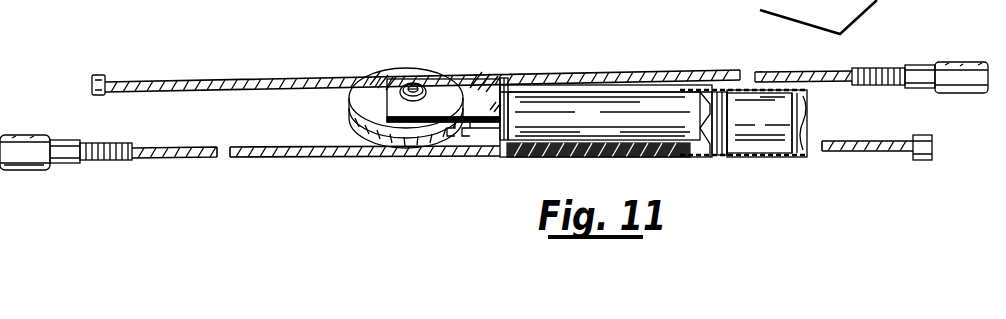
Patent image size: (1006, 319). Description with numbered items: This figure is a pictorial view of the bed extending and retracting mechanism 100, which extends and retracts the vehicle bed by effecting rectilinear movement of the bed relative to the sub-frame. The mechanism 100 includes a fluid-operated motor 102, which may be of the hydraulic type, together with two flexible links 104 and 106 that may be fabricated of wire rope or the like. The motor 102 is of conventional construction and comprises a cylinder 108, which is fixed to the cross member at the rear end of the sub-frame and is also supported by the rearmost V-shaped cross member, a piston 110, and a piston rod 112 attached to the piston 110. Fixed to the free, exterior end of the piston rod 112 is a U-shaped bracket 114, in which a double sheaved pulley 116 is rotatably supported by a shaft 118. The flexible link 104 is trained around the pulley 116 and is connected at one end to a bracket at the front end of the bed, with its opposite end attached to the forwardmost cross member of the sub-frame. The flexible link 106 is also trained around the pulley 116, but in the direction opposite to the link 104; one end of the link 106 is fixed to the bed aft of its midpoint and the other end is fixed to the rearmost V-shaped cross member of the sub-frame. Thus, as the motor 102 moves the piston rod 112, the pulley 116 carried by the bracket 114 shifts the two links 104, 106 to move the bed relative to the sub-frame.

The bed extending and retracting mechanism 100 is at (417, 91).
The fluid-operated motor 102 is at (613, 90).
The flexible link 104 is at (245, 80).
The flexible link 106 is at (692, 63).
The cylinder 108 is at (542, 90).
The piston 110 is at (757, 102).
The piston rod 112 is at (728, 156).
The U-shaped bracket 114 is at (468, 88).
The double sheaved pulley 116 is at (367, 82).
The shaft 118 is at (416, 84).